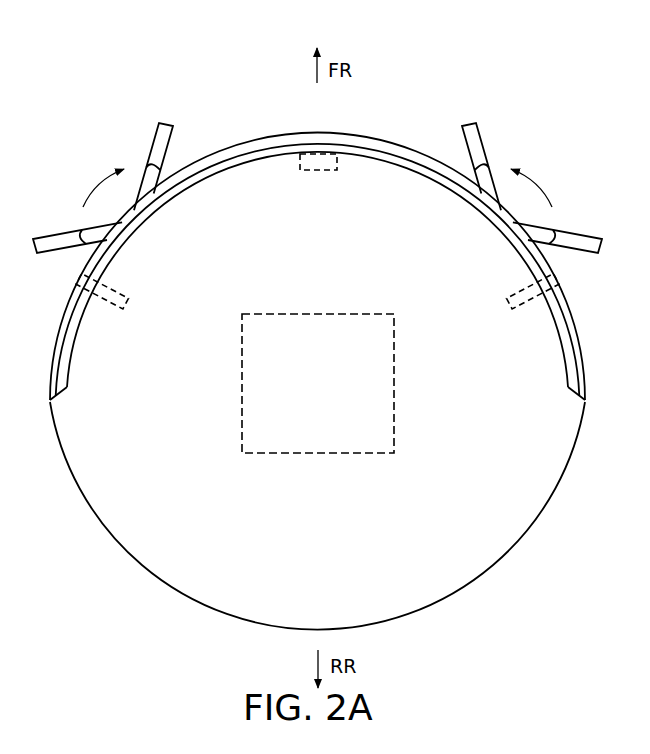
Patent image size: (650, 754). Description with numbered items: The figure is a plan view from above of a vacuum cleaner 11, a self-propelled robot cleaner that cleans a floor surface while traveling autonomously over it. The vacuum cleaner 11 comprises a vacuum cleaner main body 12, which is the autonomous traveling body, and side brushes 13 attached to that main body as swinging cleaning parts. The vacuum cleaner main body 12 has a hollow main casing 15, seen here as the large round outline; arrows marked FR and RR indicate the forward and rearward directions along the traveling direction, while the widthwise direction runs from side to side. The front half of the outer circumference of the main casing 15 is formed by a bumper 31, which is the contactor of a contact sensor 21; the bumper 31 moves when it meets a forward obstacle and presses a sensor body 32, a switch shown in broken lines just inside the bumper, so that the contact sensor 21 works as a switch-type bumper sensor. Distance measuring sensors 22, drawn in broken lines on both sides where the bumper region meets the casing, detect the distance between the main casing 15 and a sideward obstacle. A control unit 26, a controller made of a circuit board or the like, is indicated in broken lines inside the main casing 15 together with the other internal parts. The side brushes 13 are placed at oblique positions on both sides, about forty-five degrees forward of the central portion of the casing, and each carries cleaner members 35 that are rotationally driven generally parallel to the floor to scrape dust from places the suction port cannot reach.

The vacuum cleaner 11 is at (402, 73).
The vacuum cleaner main body 12 is at (331, 137).
The side brush 13 is at (143, 116).
The main casing 15 is at (486, 561).
The contact sensor 21 is at (292, 139).
The distance measuring sensor 22 is at (114, 284).
The control unit 26 is at (314, 314).
The bumper 31 is at (378, 140).
The sensor body 32 is at (315, 172).
The cleaner member 35 is at (152, 143).